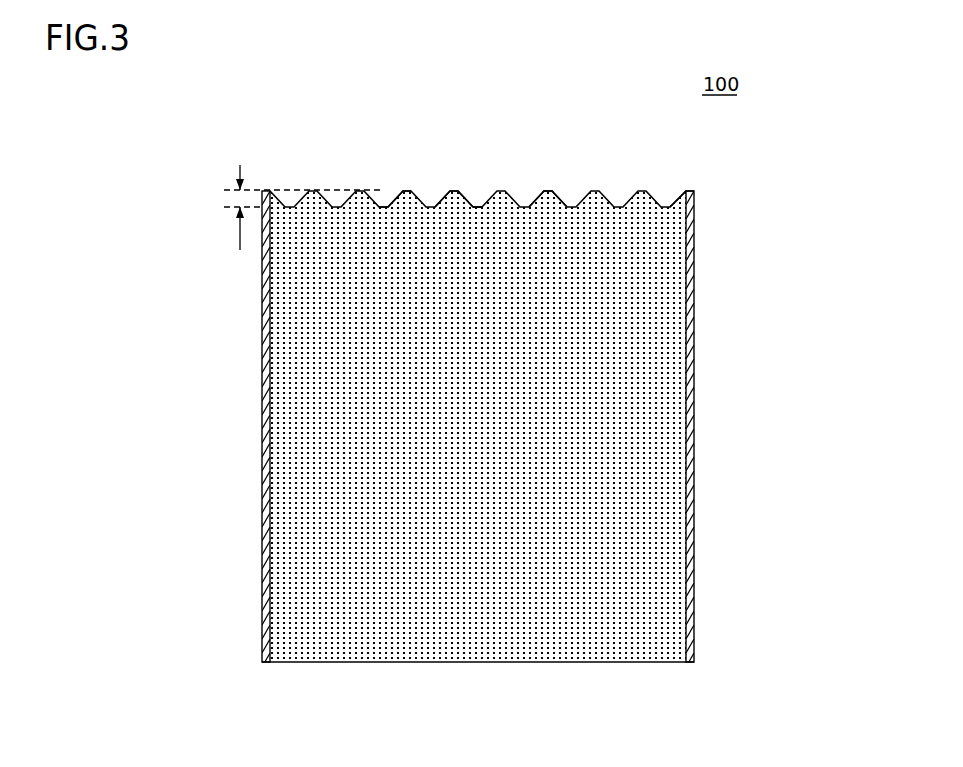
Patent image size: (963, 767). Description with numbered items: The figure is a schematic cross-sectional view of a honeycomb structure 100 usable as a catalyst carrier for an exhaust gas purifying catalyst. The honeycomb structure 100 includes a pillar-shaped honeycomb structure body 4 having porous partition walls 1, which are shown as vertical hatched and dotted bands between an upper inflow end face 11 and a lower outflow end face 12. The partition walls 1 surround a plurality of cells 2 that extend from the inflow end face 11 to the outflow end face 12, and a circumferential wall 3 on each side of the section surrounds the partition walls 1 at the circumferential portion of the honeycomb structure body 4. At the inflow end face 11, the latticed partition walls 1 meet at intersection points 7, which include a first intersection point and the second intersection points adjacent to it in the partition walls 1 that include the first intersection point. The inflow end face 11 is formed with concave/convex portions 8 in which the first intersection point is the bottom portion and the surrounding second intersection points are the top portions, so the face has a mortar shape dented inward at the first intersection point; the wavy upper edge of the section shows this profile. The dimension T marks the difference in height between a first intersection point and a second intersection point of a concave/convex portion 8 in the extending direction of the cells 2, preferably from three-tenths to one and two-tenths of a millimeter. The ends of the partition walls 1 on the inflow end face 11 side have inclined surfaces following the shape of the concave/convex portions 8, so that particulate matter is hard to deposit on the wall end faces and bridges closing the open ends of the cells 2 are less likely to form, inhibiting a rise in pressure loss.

The honeycomb structure 100 is at (737, 95).
The partition walls 1 is at (604, 195).
The cells 2 is at (394, 197).
The circumferential wall 3 is at (262, 338).
The honeycomb structure body 4 is at (712, 180).
The intersection points 7 is at (455, 190).
The concave/convex portions 8 is at (470, 189).
The inflow end face 11 is at (293, 173).
The outflow end face 12 is at (285, 668).
The difference in height T is at (227, 207).